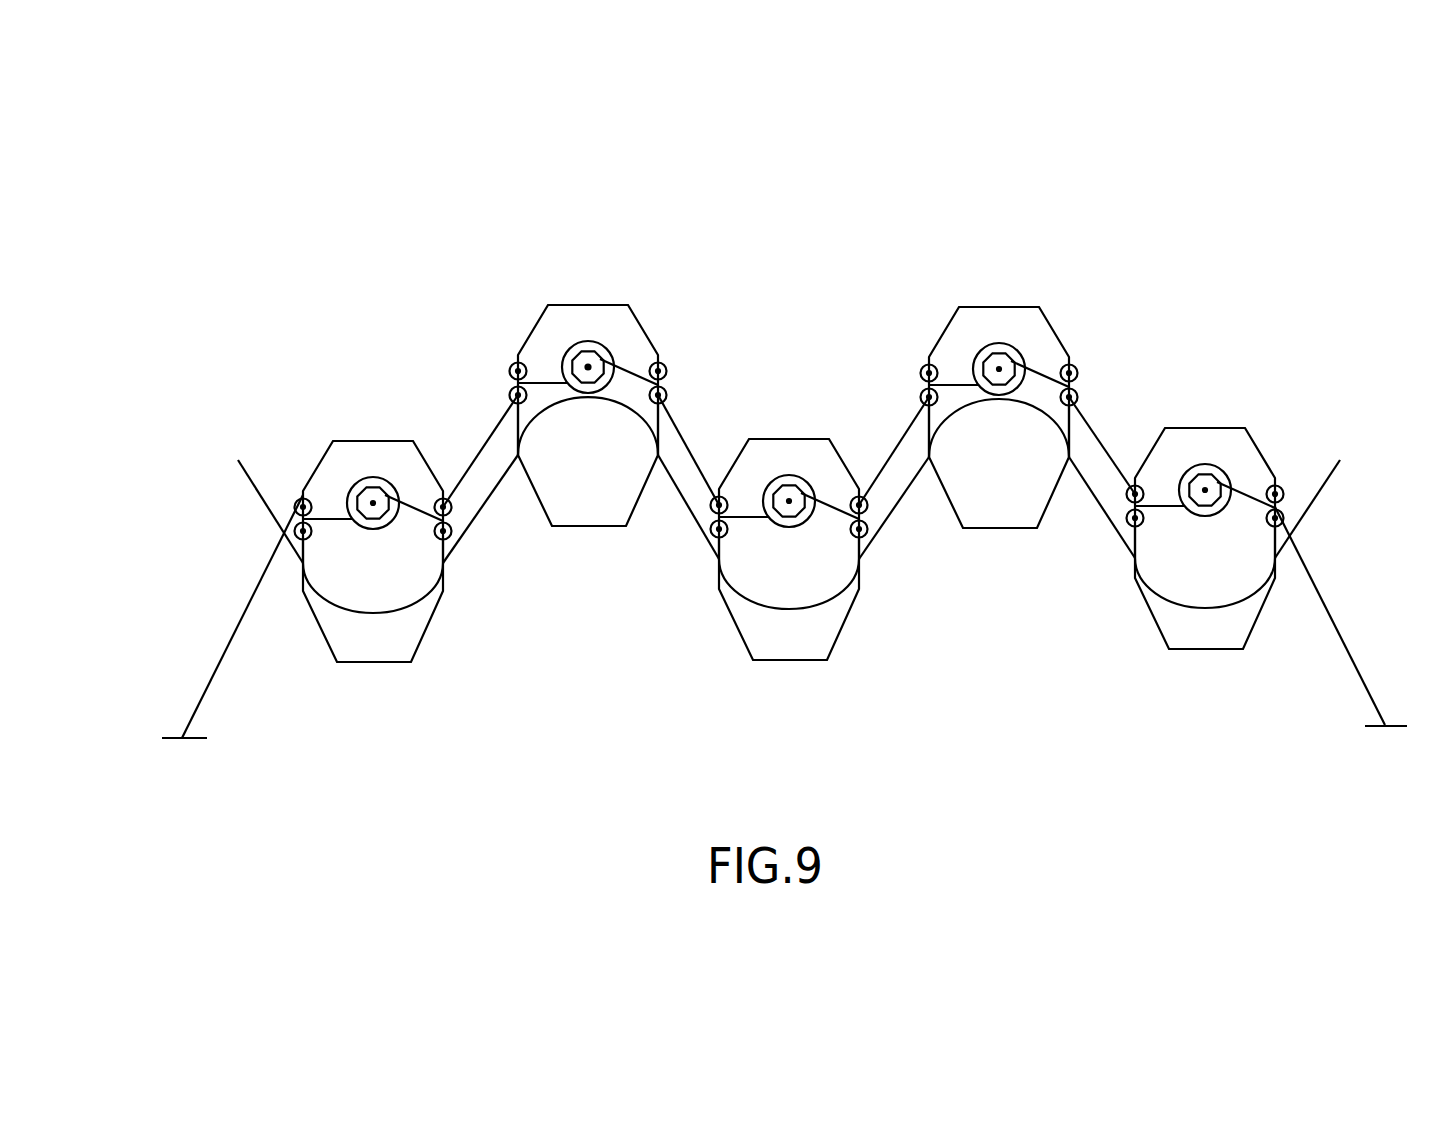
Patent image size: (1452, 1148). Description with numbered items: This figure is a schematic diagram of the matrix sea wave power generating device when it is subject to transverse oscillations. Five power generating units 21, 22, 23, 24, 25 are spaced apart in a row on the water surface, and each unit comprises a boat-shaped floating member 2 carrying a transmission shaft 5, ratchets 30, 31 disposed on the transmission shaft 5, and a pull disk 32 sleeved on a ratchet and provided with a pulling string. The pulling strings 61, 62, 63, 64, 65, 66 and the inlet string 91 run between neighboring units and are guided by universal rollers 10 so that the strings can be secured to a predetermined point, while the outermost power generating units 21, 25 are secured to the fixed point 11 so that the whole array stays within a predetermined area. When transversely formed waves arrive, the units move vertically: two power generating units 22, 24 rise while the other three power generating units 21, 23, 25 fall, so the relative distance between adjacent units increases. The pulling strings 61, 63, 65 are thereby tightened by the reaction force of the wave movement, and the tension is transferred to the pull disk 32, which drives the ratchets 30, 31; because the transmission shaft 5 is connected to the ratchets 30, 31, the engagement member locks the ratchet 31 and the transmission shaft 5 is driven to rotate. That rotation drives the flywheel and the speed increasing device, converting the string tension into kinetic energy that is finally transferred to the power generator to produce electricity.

The floating member 2 is at (530, 335).
The transmission shaft 5 is at (586, 362).
The universal rollers 10 is at (510, 388).
The point 11 is at (193, 737).
The power generating unit 21 is at (377, 662).
The power generating unit 22 is at (575, 367).
The power generating unit 23 is at (793, 660).
The power generating unit 24 is at (1010, 528).
The power generating unit 25 is at (1212, 649).
The ratchet 30 is at (597, 358).
The ratchet 31 is at (573, 355).
The pull disk 32 is at (607, 363).
The pulling string 61 is at (481, 448).
The pulling string 62 is at (692, 450).
The pulling string 63 is at (905, 420).
The web segment 64 is at (1100, 433).
The pulling string 65 is at (1323, 602).
The web segment 66 is at (212, 673).
The web inlet 91 is at (263, 502).